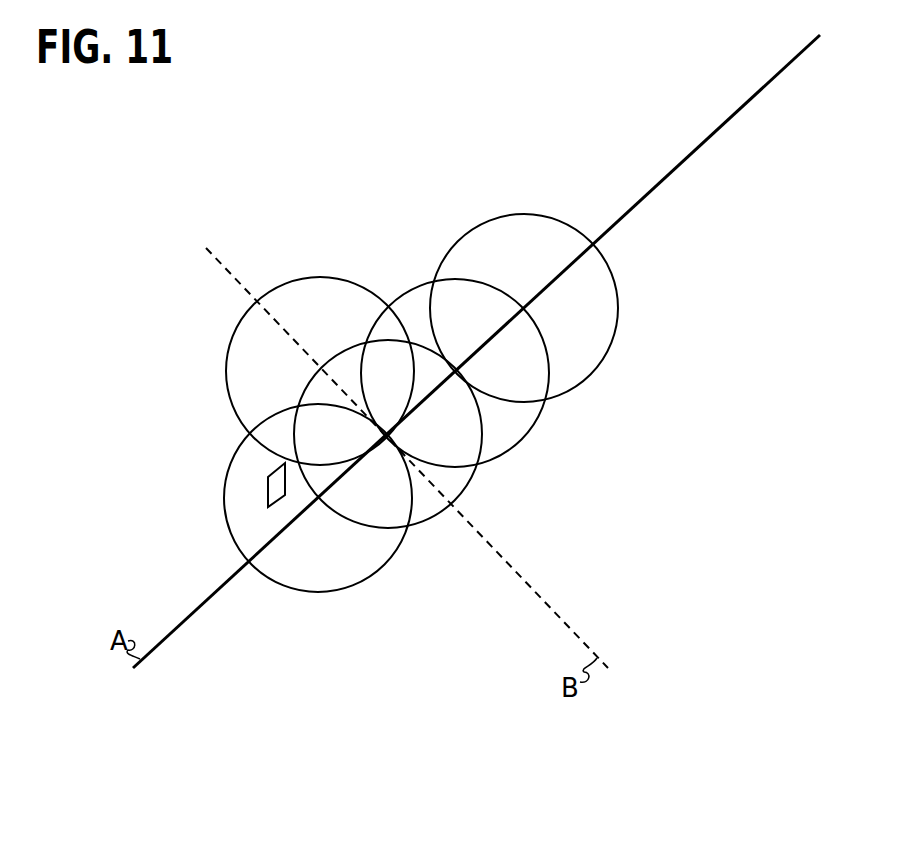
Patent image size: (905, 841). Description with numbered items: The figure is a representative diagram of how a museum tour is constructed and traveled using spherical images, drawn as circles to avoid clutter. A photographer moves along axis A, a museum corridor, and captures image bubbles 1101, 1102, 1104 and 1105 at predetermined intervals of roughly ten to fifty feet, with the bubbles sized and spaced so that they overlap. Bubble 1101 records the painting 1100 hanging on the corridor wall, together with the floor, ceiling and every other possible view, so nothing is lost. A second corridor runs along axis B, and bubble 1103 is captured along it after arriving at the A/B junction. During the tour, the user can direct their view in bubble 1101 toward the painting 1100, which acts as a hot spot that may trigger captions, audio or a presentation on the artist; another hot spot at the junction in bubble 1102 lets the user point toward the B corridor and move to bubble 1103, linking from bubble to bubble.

The painting 1100 is at (268, 488).
The image bubble 1101 is at (375, 574).
The image bubble 1102 is at (467, 488).
The image bubble 1103 is at (304, 273).
The image bubble 1104 is at (535, 426).
The image bubble 1105 is at (617, 313).